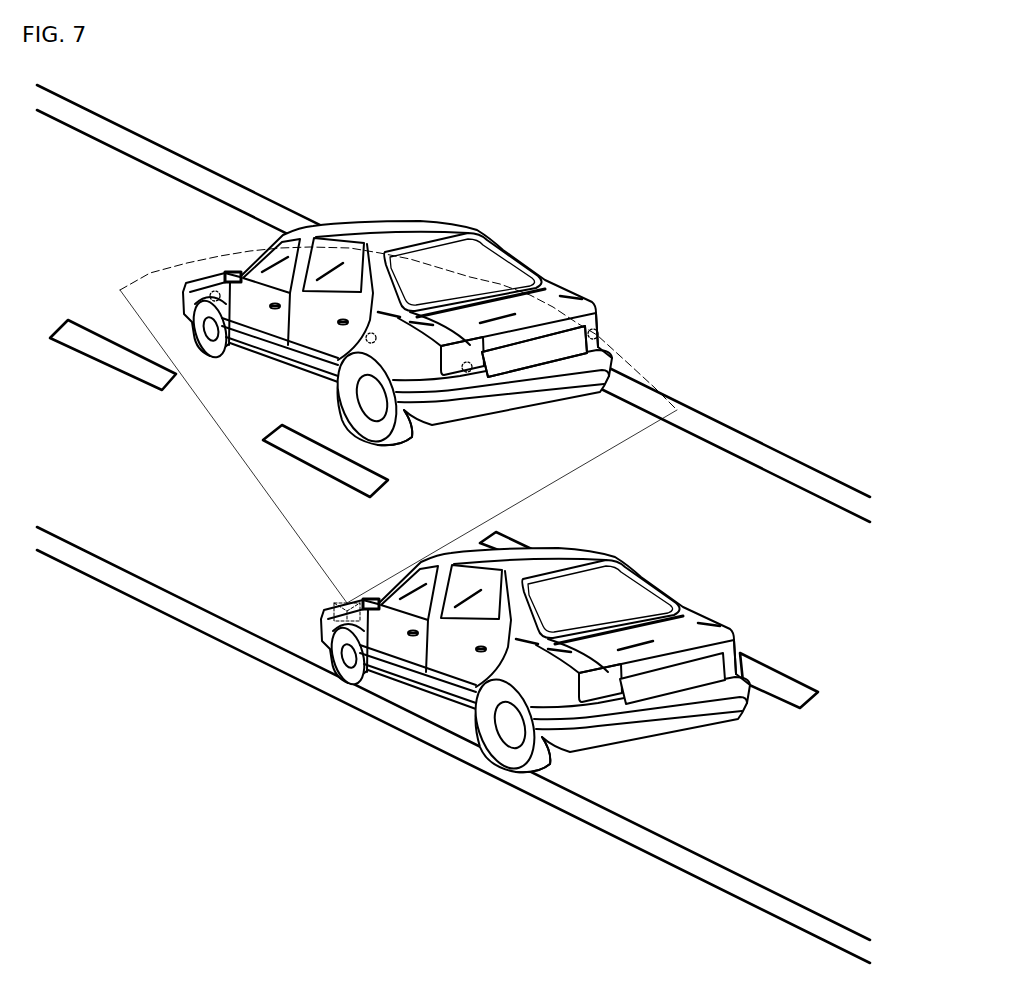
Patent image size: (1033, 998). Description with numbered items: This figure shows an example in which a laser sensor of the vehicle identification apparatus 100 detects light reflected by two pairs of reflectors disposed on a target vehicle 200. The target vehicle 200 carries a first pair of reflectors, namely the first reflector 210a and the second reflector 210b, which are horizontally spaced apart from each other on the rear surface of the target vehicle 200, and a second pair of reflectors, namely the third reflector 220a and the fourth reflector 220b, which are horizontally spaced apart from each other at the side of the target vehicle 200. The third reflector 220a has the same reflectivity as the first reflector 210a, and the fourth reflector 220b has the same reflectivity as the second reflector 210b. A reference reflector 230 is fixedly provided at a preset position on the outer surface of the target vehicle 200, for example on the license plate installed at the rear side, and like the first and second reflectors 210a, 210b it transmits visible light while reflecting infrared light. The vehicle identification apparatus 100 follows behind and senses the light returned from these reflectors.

The vehicle identification apparatus 100 is at (333, 623).
The target vehicle 200 is at (417, 204).
The first reflector 210a is at (468, 372).
The second reflector 210b is at (595, 340).
The third reflector 220a is at (214, 302).
The fourth reflector 220b is at (368, 343).
The reference reflector 230 is at (538, 357).